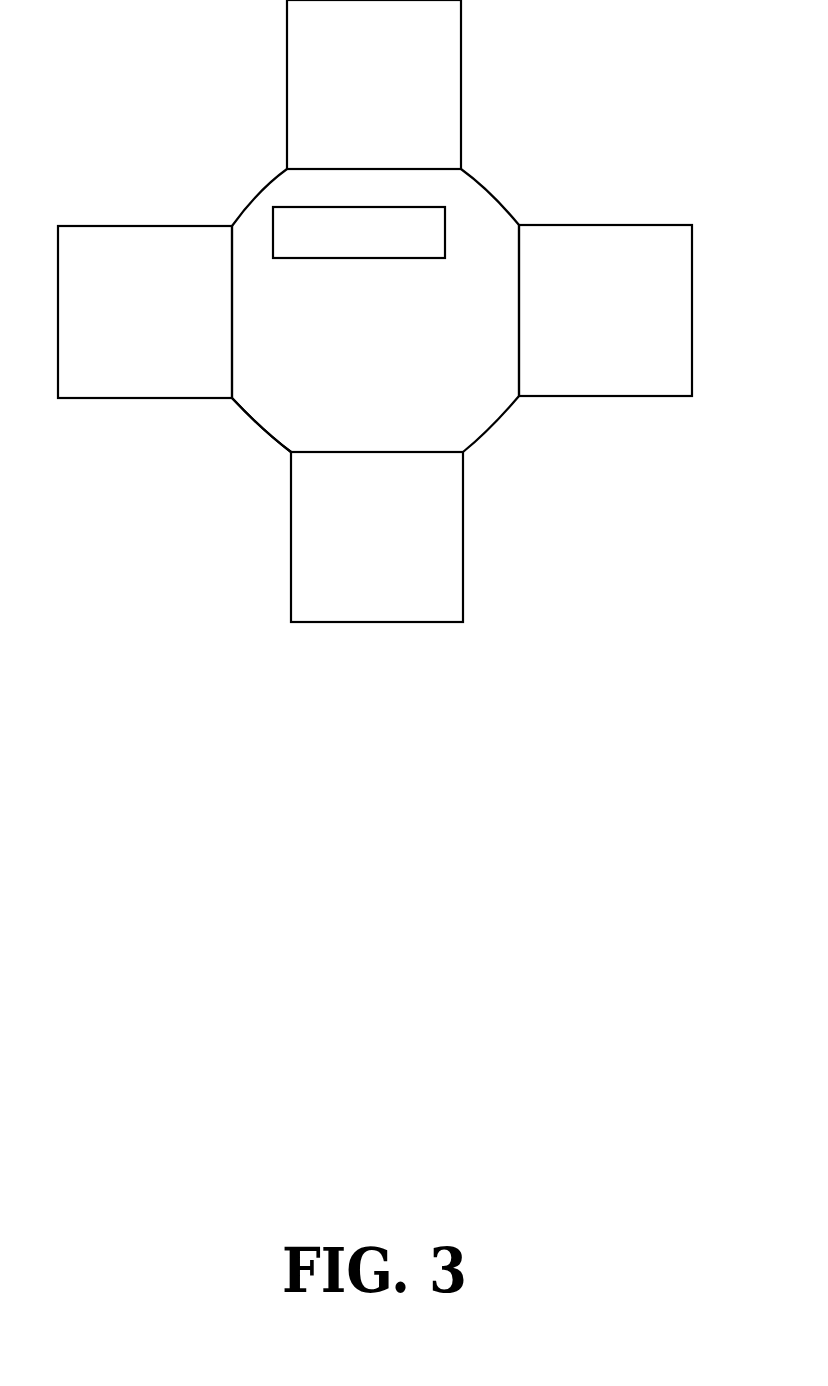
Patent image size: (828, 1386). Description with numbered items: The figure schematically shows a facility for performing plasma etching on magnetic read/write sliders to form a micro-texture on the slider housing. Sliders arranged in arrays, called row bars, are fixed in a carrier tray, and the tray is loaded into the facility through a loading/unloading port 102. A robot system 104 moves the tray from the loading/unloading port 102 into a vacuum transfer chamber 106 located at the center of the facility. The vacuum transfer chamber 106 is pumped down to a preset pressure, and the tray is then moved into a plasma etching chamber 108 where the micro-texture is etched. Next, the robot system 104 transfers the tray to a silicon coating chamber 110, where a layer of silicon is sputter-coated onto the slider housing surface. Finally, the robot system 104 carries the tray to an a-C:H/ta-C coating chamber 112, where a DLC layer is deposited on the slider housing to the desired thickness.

The loading/unloading port 102 is at (303, 570).
The robot system 104 is at (285, 215).
The vacuum transfer chamber 106 is at (280, 420).
The plasma etching chamber 108 is at (606, 250).
The silicon coating chamber 110 is at (432, 75).
The a-C:H/ta-C coating chamber 112 is at (117, 238).